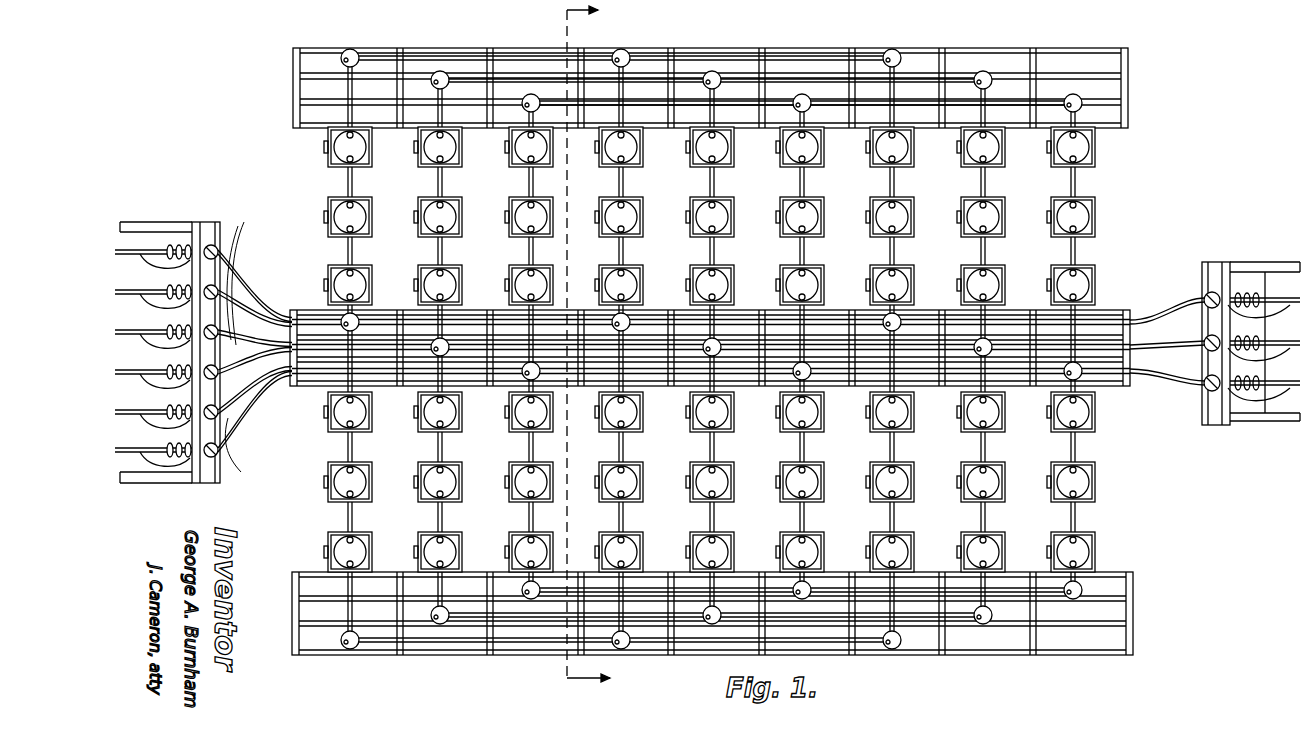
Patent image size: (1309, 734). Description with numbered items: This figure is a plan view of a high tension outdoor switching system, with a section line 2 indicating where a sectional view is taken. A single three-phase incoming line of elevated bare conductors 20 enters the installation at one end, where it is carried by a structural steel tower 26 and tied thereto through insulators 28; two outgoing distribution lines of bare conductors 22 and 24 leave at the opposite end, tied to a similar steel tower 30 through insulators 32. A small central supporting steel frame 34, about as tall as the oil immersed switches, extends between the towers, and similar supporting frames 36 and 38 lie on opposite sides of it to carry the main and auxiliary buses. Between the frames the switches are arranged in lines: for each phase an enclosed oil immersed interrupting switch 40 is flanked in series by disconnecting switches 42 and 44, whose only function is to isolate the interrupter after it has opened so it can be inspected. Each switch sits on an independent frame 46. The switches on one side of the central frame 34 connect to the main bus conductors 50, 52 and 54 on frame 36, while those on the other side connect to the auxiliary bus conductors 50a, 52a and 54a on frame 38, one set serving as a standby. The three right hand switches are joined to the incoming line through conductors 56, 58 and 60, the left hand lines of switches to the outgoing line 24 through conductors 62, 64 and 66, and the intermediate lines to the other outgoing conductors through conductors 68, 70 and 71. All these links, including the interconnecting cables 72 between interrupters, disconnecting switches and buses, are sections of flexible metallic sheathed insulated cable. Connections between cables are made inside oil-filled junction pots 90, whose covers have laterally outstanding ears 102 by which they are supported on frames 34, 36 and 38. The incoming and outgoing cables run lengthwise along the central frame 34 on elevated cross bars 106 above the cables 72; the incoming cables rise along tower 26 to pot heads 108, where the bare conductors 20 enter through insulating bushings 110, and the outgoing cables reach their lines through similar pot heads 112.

The section line 2 is at (576, 348).
The incoming bare conductors 20 is at (1290, 339).
The outgoing bare conductors 22 is at (160, 280).
The outgoing bare conductors 24 is at (127, 373).
The structural steel tower 26 is at (1227, 263).
The insulators 28 is at (1244, 294).
The steel tower 30 is at (203, 227).
The insulators 32 is at (178, 245).
The central supporting steel frame 34 is at (1112, 305).
The supporting frame 36 is at (1128, 52).
The supporting frame 38 is at (1132, 591).
The interrupting switch 40 is at (327, 208).
The disconnecting switch 42 is at (336, 148).
The disconnecting switch 44 is at (332, 280).
The independent frame 46 is at (459, 166).
The main bus conductor 50 is at (1000, 100).
The auxiliary bus conductor 50a is at (1058, 590).
The main bus conductor 52 is at (500, 79).
The auxiliary bus conductor 52a is at (963, 614).
The main bus conductor 54 is at (443, 57).
The auxiliary bus conductor 54a is at (877, 640).
The incoming conductor 56 is at (1153, 376).
The incoming conductor 58 is at (1178, 350).
The incoming conductor 60 is at (1190, 311).
The outgoing conductor 62 is at (235, 432).
The outgoing conductor 64 is at (248, 384).
The outgoing conductor 66 is at (277, 388).
The outgoing conductor 68 is at (238, 288).
The outgoing conductor 70 is at (264, 295).
The outgoing conductor 71 is at (266, 306).
The interconnecting high tension cable 72 is at (347, 512).
The junction pot 90 is at (626, 52).
The laterally outstanding ears 102 is at (710, 72).
The elevated cross bars 106 is at (487, 311).
The pot head 108 is at (1190, 313).
The insulating bushing 110 is at (1212, 292).
The pot head 112 is at (243, 346).